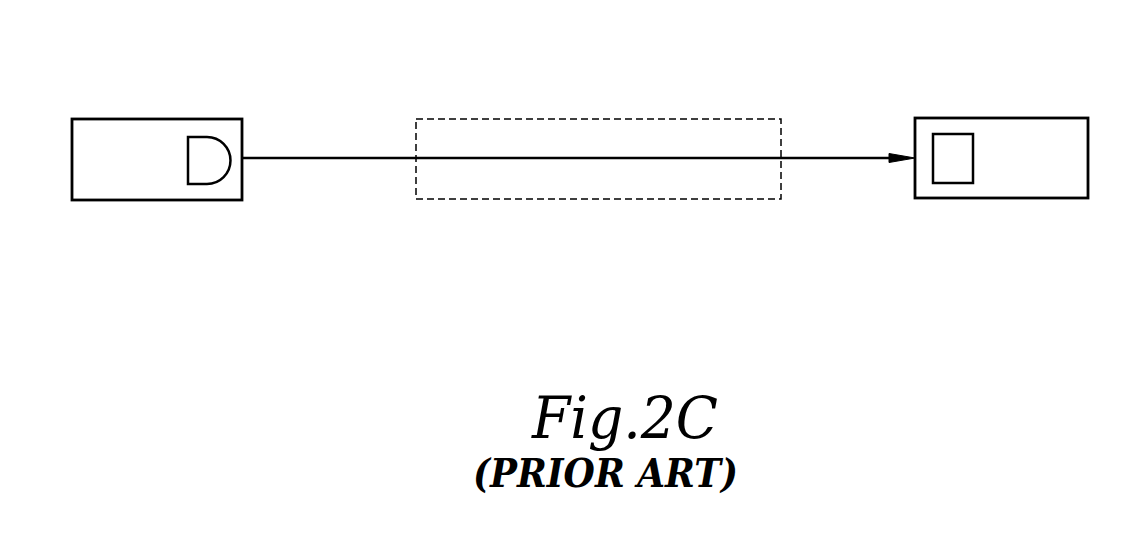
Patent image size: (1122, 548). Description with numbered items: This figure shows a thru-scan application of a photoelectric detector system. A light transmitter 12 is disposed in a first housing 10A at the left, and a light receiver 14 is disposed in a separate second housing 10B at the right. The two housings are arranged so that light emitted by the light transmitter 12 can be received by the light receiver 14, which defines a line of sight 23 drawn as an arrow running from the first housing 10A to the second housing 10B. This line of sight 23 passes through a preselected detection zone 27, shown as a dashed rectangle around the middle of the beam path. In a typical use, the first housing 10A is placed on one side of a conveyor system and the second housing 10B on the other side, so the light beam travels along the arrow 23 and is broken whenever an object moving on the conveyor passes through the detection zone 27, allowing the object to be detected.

The first housing 10A is at (92, 130).
The light transmitter 12 is at (200, 150).
The line of sight 23 is at (341, 158).
The detection zone 27 is at (588, 118).
The second housing 10B is at (1052, 178).
The light receiver 14 is at (948, 150).